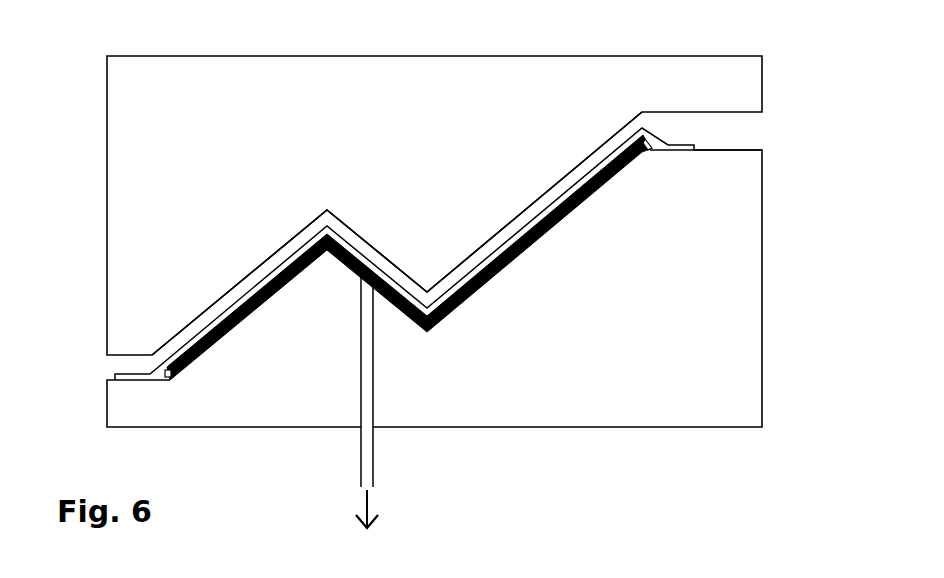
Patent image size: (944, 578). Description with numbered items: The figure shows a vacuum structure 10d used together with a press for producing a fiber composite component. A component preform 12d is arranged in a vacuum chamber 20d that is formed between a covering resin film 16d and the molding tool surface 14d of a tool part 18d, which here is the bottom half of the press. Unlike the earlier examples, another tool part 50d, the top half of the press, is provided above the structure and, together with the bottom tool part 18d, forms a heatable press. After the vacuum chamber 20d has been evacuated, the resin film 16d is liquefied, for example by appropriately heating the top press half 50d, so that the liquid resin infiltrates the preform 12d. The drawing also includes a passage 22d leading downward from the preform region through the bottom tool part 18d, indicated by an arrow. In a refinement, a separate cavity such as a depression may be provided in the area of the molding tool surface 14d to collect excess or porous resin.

The vacuum structure 10d is at (248, 283).
The component preform 12d is at (262, 302).
The molding tool surface 14d is at (733, 148).
The resin film 16d is at (357, 242).
The tool part 18d is at (717, 340).
The vacuum chamber 20d is at (172, 377).
The electrical lead channel 22d is at (366, 389).
The tool part 50d is at (145, 180).